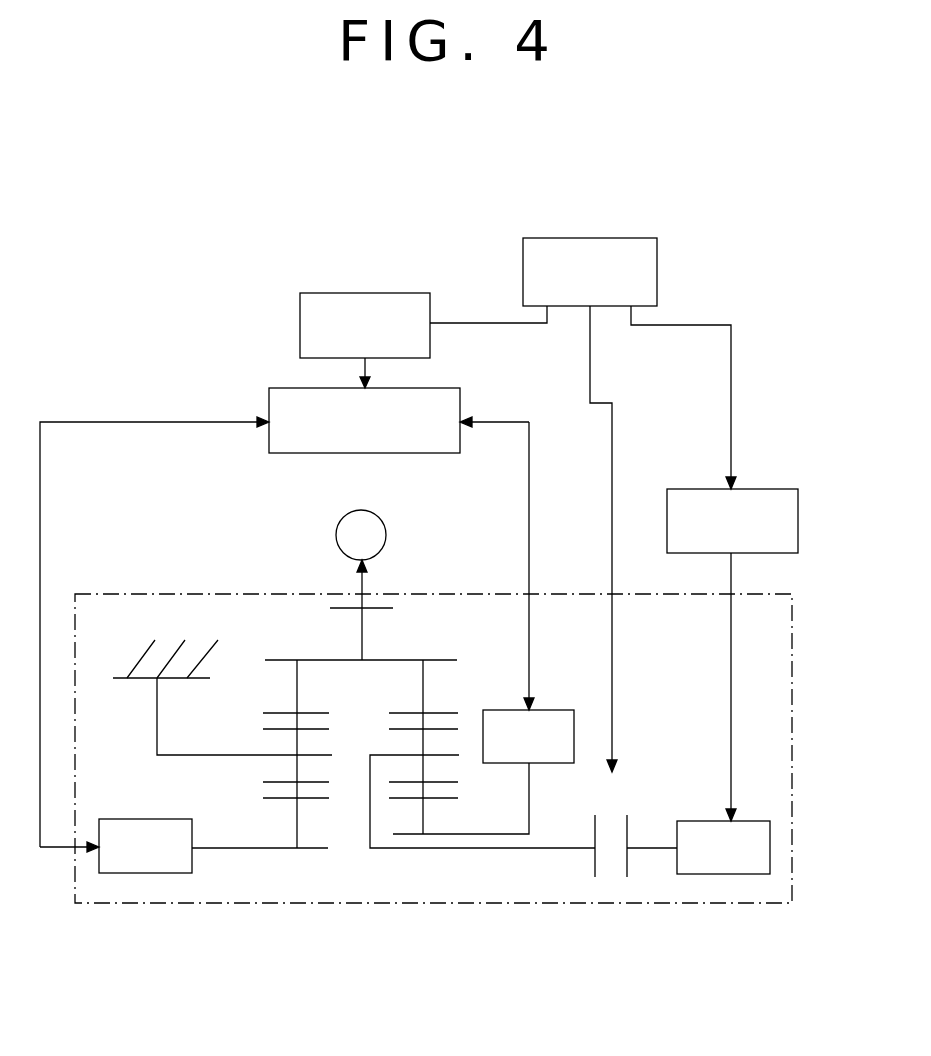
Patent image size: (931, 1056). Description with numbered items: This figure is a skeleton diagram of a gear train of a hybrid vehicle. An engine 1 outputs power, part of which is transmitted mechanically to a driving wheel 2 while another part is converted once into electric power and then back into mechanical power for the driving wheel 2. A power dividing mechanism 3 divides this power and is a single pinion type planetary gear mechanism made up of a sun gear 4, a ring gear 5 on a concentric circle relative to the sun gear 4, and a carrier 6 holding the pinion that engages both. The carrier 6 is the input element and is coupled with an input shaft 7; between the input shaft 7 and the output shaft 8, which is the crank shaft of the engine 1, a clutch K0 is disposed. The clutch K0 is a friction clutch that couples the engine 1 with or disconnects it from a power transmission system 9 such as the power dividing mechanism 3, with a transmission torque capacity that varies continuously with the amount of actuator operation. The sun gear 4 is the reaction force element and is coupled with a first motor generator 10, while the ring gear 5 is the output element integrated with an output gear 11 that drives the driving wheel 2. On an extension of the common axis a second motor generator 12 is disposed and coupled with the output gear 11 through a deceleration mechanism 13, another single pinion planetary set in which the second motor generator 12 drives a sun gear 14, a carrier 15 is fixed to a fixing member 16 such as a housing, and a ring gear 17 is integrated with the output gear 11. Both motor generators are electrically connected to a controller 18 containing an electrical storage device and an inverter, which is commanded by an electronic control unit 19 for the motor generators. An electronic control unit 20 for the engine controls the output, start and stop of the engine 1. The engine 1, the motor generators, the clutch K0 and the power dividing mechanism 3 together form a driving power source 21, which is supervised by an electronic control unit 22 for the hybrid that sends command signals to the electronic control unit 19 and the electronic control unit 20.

The engine 1 is at (760, 820).
The driving wheel 2 is at (387, 533).
The power dividing mechanism 3 is at (406, 759).
The sun gear 4 is at (443, 801).
The ring gear 5 is at (406, 712).
The carrier 6 is at (382, 753).
The input shaft 7 is at (540, 853).
The output shaft 8 is at (657, 843).
The power transmission system 9 is at (303, 883).
The first motor generator 10 is at (553, 708).
The output gear 11 is at (378, 612).
The second motor generator 12 is at (142, 818).
The deceleration mechanism 13 is at (256, 817).
The sun gear 14 is at (318, 801).
The carrier 15 is at (206, 753).
The fixing member 16 is at (158, 653).
The ring gear 17 is at (272, 712).
The controller 18 is at (460, 400).
The electronic control unit for a motor generator 19 is at (396, 292).
The electronic control unit for engine 20 is at (783, 488).
The driving power source 21 is at (792, 670).
The electronic control unit for a hybrid 22 is at (657, 265).
The clutch K0 is at (611, 828).